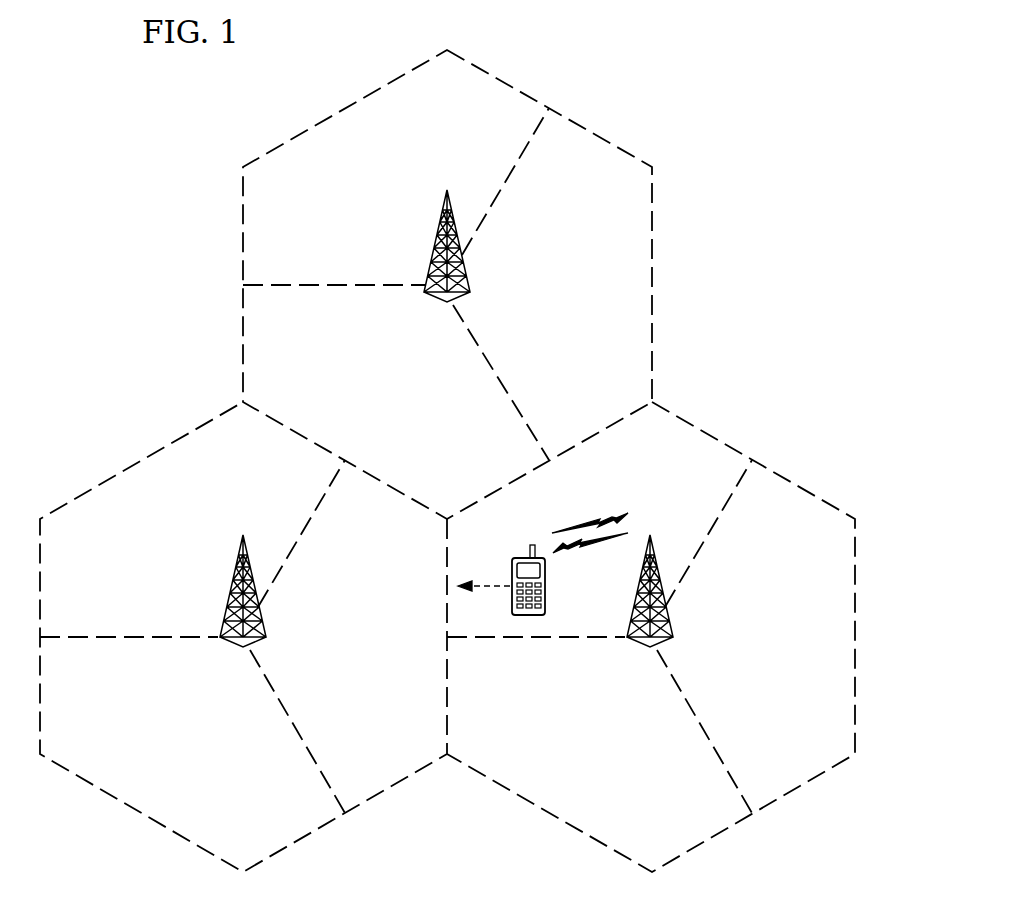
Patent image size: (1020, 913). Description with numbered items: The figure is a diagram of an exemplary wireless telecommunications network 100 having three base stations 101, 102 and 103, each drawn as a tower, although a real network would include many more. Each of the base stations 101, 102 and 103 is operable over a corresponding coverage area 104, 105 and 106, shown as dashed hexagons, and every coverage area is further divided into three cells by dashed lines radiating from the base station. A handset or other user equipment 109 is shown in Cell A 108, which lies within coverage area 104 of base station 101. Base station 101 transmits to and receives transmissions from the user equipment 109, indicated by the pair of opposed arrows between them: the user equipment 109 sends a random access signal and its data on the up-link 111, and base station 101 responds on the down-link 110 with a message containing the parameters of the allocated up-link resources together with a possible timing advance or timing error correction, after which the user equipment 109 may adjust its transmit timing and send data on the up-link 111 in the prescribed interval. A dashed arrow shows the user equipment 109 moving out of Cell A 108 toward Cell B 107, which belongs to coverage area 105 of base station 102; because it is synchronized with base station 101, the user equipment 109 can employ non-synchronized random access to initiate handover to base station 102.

The wireless telecommunications network 100 is at (672, 61).
The base station 101 is at (672, 622).
The base station 102 is at (230, 592).
The base station 103 is at (434, 252).
The coverage area 104 is at (714, 830).
The coverage area 105 is at (150, 815).
The coverage area 106 is at (580, 127).
The Cell B 107 is at (385, 668).
The Cell A 108 is at (670, 495).
The user equipment 109 is at (522, 557).
The down-link 110 is at (582, 554).
The up-link 111 is at (586, 521).